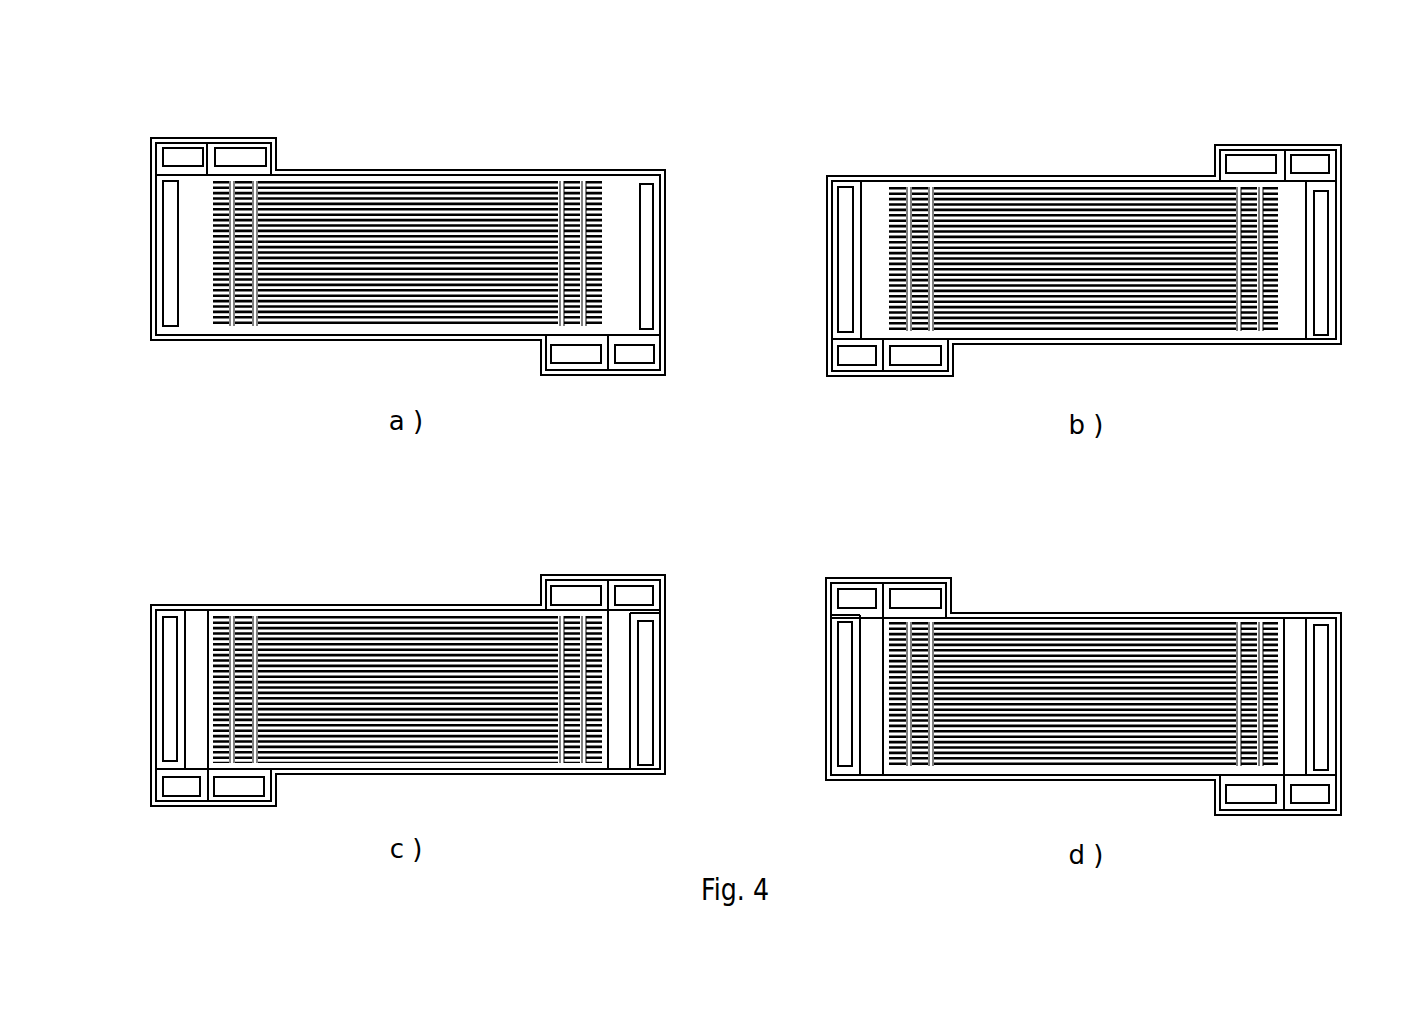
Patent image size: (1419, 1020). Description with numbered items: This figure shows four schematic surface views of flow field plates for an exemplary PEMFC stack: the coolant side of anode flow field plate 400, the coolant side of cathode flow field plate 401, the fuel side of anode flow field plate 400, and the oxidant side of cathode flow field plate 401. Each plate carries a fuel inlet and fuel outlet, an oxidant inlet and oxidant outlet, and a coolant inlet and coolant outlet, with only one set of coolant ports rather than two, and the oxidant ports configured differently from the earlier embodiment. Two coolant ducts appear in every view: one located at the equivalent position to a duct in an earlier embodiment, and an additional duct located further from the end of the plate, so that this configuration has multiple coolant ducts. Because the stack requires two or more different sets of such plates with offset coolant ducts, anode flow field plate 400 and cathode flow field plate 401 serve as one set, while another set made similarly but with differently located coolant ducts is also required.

The anode flow field plate 400 is at (676, 163).
The cathode flow field plate 401 is at (1351, 171).